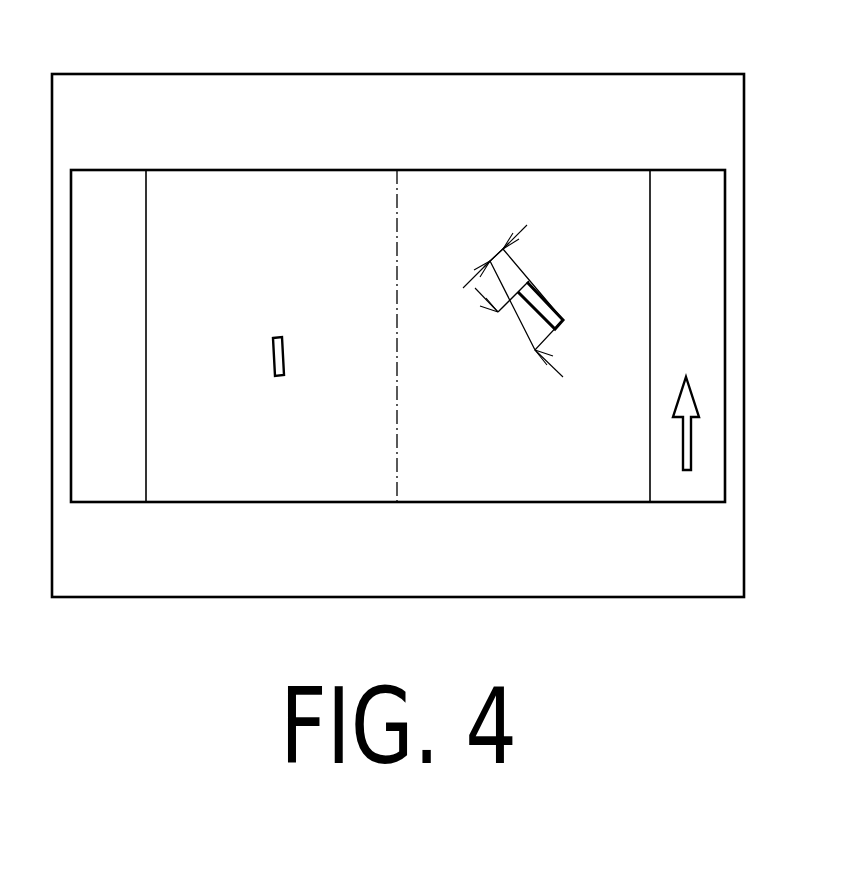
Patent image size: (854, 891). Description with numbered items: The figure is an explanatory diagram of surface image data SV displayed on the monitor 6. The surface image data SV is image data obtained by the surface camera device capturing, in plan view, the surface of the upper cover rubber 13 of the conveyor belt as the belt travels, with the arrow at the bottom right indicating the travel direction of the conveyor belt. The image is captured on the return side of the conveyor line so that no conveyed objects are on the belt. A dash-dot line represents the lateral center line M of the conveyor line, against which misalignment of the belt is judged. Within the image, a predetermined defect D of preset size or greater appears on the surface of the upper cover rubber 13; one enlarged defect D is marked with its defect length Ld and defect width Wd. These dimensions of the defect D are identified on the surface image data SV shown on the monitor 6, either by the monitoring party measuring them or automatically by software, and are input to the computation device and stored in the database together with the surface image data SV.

The monitor 6 is at (540, 92).
The surface image data SV is at (255, 170).
The upper cover rubber 13 is at (253, 485).
The lateral center line M is at (397, 475).
The defect D is at (283, 356).
The defect width Wd is at (492, 253).
The defect length Ld is at (519, 332).